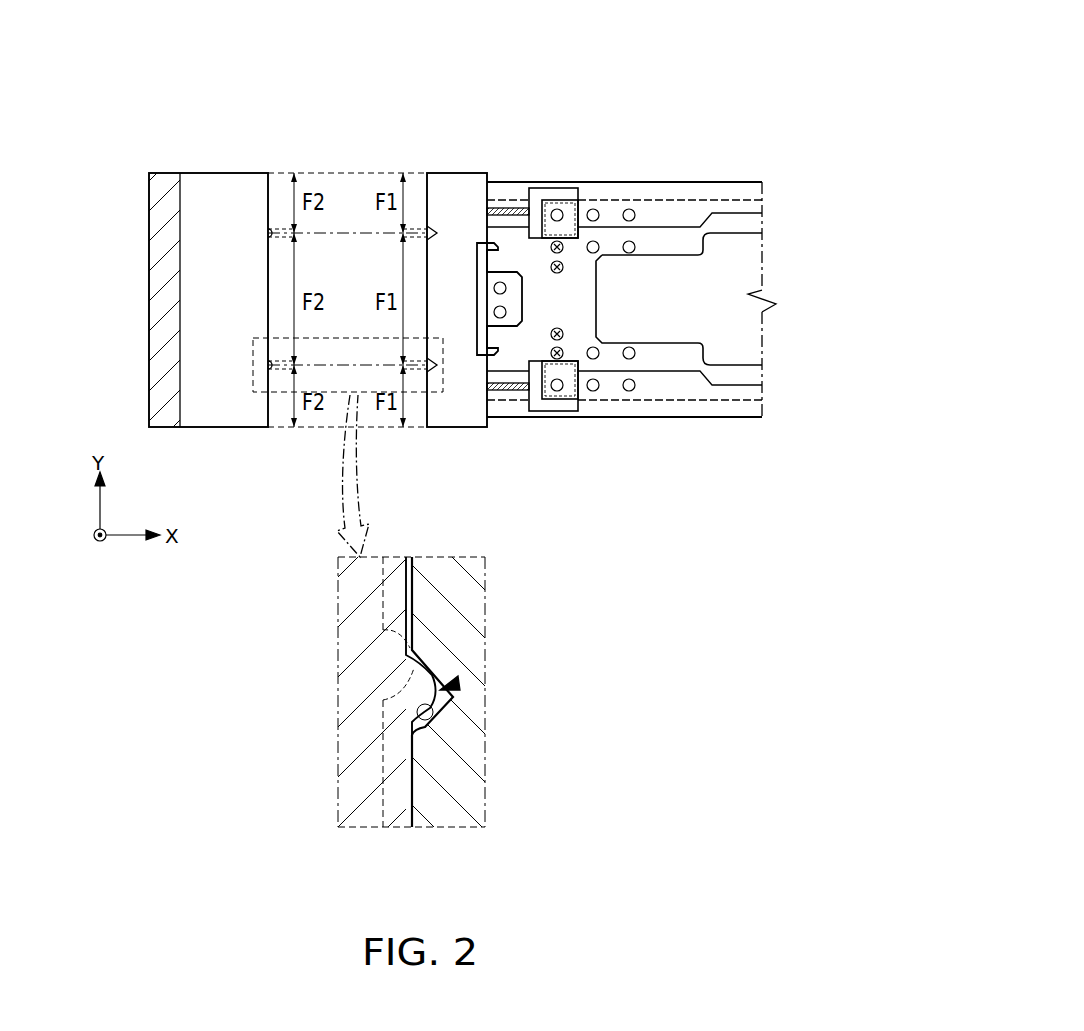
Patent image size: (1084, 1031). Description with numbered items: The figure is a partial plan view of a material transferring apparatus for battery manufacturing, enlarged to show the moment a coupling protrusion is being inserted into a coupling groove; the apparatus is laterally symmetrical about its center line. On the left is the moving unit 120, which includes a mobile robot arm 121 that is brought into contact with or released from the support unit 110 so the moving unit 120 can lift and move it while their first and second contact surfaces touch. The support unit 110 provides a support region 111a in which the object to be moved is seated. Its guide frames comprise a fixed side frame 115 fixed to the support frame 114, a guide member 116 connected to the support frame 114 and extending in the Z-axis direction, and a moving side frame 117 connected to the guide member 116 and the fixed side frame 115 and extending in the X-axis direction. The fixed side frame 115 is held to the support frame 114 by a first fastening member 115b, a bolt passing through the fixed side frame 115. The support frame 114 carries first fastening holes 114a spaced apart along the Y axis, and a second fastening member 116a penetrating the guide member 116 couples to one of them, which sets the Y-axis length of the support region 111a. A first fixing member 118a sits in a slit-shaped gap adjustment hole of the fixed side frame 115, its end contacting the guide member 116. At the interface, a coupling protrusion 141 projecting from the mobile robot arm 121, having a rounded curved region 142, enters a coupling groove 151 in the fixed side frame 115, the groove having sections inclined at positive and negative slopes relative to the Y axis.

The support unit 110 is at (654, 88).
The support region 111a is at (744, 268).
The support frame 114 is at (677, 243).
The first fastening holes 114a is at (550, 266).
The fixed side frame 115 is at (466, 173).
The first fastening member 115b is at (500, 320).
The guide member 116 is at (553, 196).
The second fastening member 116a is at (564, 218).
The moving side frame 117 is at (625, 191).
The first fixing member 118a is at (460, 388).
The moving unit 120 is at (226, 88).
The mobile robot arm 121 is at (196, 402).
The coupling protrusion 141 is at (280, 175).
The curved region 142 is at (455, 686).
The coupling groove 151 is at (427, 175).